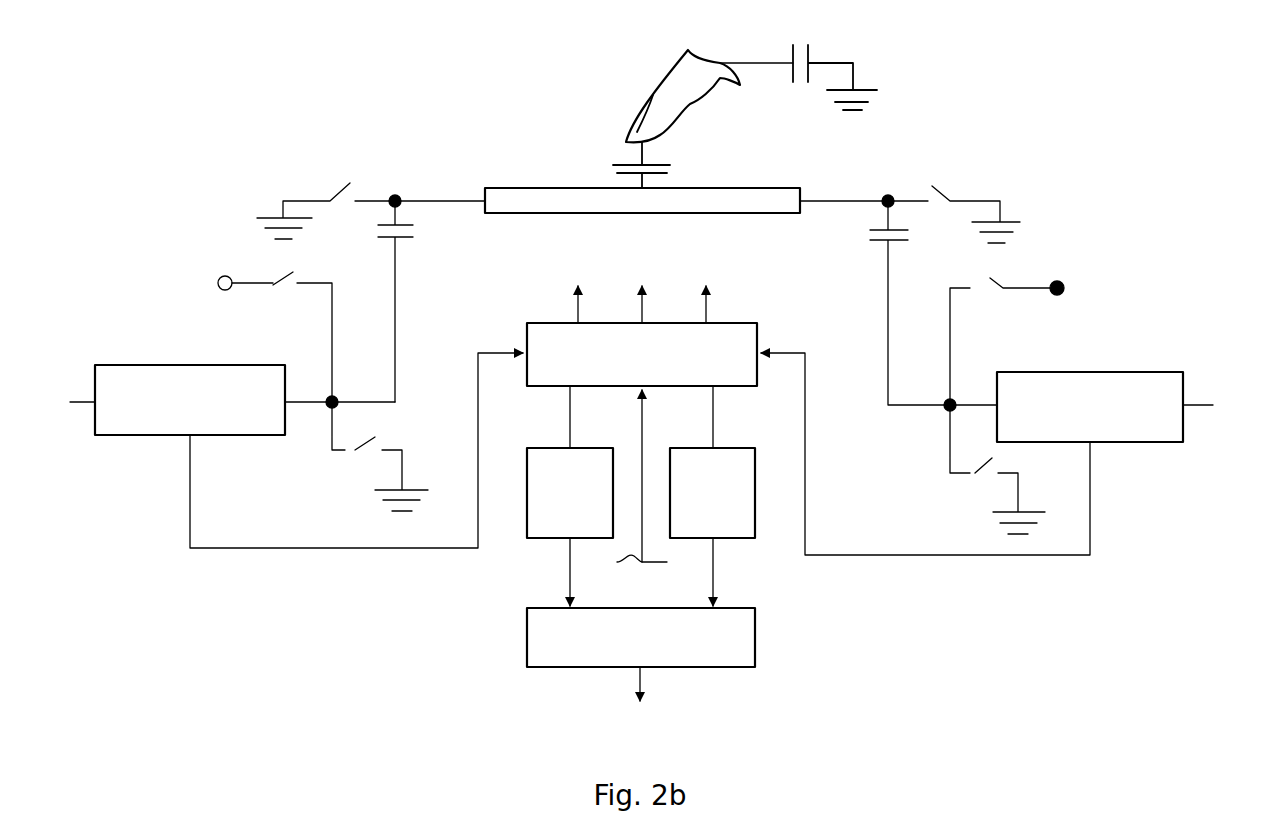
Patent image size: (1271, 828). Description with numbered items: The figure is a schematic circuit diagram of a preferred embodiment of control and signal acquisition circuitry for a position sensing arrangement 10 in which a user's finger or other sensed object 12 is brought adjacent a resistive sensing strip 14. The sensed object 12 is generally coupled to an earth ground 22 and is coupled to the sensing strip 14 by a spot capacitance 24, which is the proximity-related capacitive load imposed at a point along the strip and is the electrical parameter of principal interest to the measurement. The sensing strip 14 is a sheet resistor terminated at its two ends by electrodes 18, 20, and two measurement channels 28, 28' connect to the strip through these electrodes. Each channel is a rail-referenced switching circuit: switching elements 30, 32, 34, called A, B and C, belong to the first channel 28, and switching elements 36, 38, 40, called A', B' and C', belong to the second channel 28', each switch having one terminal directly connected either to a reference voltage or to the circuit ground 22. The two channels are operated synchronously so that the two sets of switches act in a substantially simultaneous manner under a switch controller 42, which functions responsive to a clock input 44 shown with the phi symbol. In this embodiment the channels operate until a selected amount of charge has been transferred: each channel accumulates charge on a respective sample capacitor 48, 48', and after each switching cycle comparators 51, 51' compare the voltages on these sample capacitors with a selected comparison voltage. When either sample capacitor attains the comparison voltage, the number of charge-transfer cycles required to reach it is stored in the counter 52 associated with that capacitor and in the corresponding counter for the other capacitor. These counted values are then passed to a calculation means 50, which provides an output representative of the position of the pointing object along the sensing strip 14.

The proximity sensing system 10 is at (151, 575).
The sensed object 12 is at (661, 87).
The resistive sensing strip 14 is at (503, 189).
The electrode 18 is at (396, 191).
The electrode 20 is at (887, 196).
The earth ground 22 is at (877, 90).
The spot capacitance 24 is at (613, 164).
The channel 28 is at (356, 489).
The channel 28' is at (925, 492).
The switching element 30 is at (347, 181).
The switching element 32 is at (276, 290).
The switching element 34 is at (345, 456).
The switching element 36 is at (940, 187).
The switching element 38 is at (996, 292).
The switching element 40 is at (958, 478).
The switch controller 42 is at (742, 388).
The clock input 44 is at (634, 483).
The sample capacitor 48 is at (416, 301).
The sample capacitor 48' is at (908, 303).
The calculation means 50 is at (725, 667).
The comparator 51 is at (222, 430).
The comparator 51' is at (1091, 428).
The counter 52 is at (542, 447).